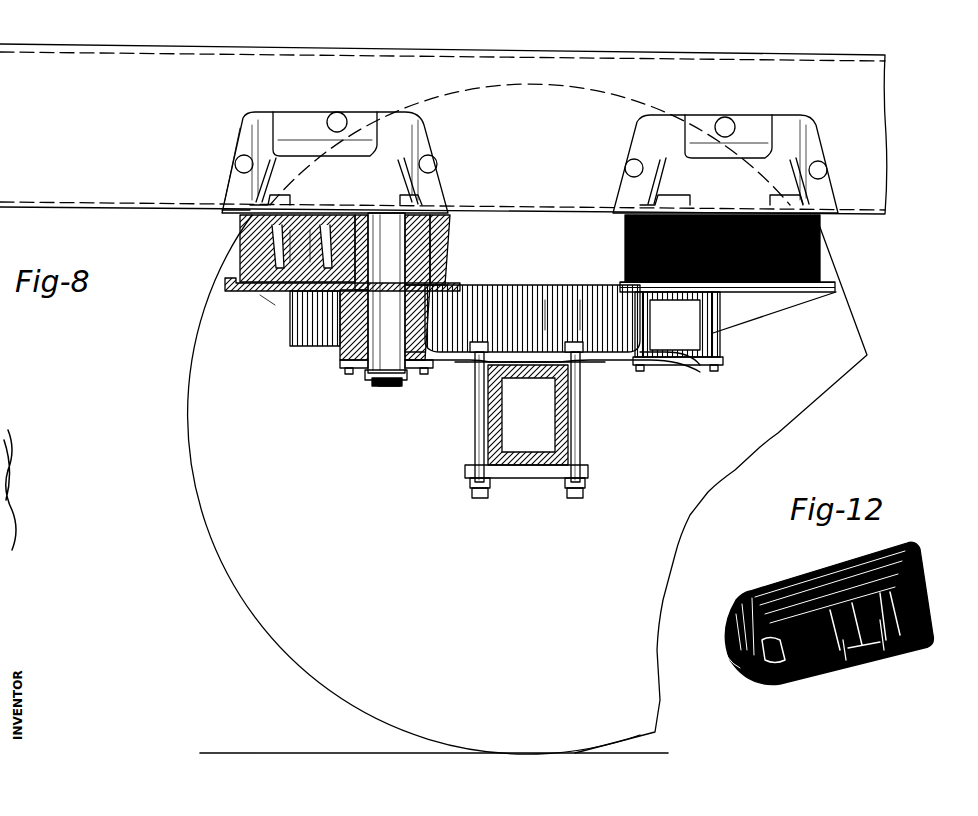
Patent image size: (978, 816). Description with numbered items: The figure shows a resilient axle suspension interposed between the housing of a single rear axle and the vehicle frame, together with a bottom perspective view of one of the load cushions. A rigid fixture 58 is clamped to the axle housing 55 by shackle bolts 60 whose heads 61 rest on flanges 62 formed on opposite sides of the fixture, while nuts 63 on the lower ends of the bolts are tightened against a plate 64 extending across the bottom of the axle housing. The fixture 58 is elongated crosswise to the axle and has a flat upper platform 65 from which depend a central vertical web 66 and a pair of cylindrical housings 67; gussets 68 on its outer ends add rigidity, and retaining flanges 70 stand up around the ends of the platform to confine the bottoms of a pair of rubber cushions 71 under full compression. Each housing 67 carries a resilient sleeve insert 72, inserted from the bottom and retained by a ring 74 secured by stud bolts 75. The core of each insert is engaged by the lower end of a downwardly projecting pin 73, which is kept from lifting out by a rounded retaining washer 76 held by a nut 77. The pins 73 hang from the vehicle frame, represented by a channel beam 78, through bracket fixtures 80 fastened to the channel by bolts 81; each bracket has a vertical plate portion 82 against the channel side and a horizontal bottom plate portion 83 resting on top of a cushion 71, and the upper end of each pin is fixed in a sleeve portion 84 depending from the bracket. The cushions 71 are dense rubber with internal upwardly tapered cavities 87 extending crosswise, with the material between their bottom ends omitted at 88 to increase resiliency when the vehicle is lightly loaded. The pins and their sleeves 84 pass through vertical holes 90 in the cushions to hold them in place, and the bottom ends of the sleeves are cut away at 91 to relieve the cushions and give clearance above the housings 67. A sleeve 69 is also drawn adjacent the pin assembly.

In FIG. 8, the axle housing 55 is at (565, 402).
In FIG. 8, the rigid fixture 58 is at (522, 272).
In FIG. 8, the shackle bolts 60 is at (475, 408).
In FIG. 8, the heads of the bolts 61 is at (478, 362).
In FIG. 8, the flanges 62 is at (585, 366).
In FIG. 8, the nuts 63 is at (565, 492).
In FIG. 8, the plate 64 is at (590, 470).
In FIG. 8, the upper platform or plate 65 is at (545, 300).
In FIG. 8, the central vertical web 66 is at (580, 300).
In FIG. 8, the cylindrical housings 67 is at (348, 325).
In FIG. 8, the gussets 68 is at (280, 305).
In FIG. 8, the sleeve 69 is at (335, 300).
In FIG. 8, the retaining flanges 70 is at (478, 272).
In FIG. 8, the resilient cushions or blocks 71 is at (240, 240).
In FIG. 12, the resilient cushions or blocks 71 is at (920, 568).
In FIG. 8, the resilient sleeve inserts 72 is at (360, 340).
In FIG. 8, the downwardly projecting pins 73 is at (382, 388).
In FIG. 8, the rings 74 is at (350, 364).
In FIG. 8, the stud bolts 75 is at (428, 370).
In FIG. 8, the retaining rings or washers 76 is at (368, 383).
In FIG. 8, the nuts 77 is at (404, 380).
In FIG. 8, the channel beam 78 is at (888, 128).
In FIG. 8, the bracket fixtures 80 is at (262, 110).
In FIG. 8, the bolts 81 is at (235, 162).
In FIG. 8, the vertical plate portions 82 is at (240, 140).
In FIG. 8, the horizontal bottom plate portions 83 is at (232, 210).
In FIG. 8, the sleeve portions 84 is at (433, 236).
In FIG. 8, the cavities 87 is at (275, 262).
In FIG. 12, the cavities 87 is at (845, 665).
In FIG. 8, the omitted material between cavities 88 is at (262, 300).
In FIG. 12, the omitted material between cavities 88 is at (858, 662).
In FIG. 12, the vertical holes 90 is at (738, 668).
In FIG. 8, the cut away portions 91 is at (433, 258).